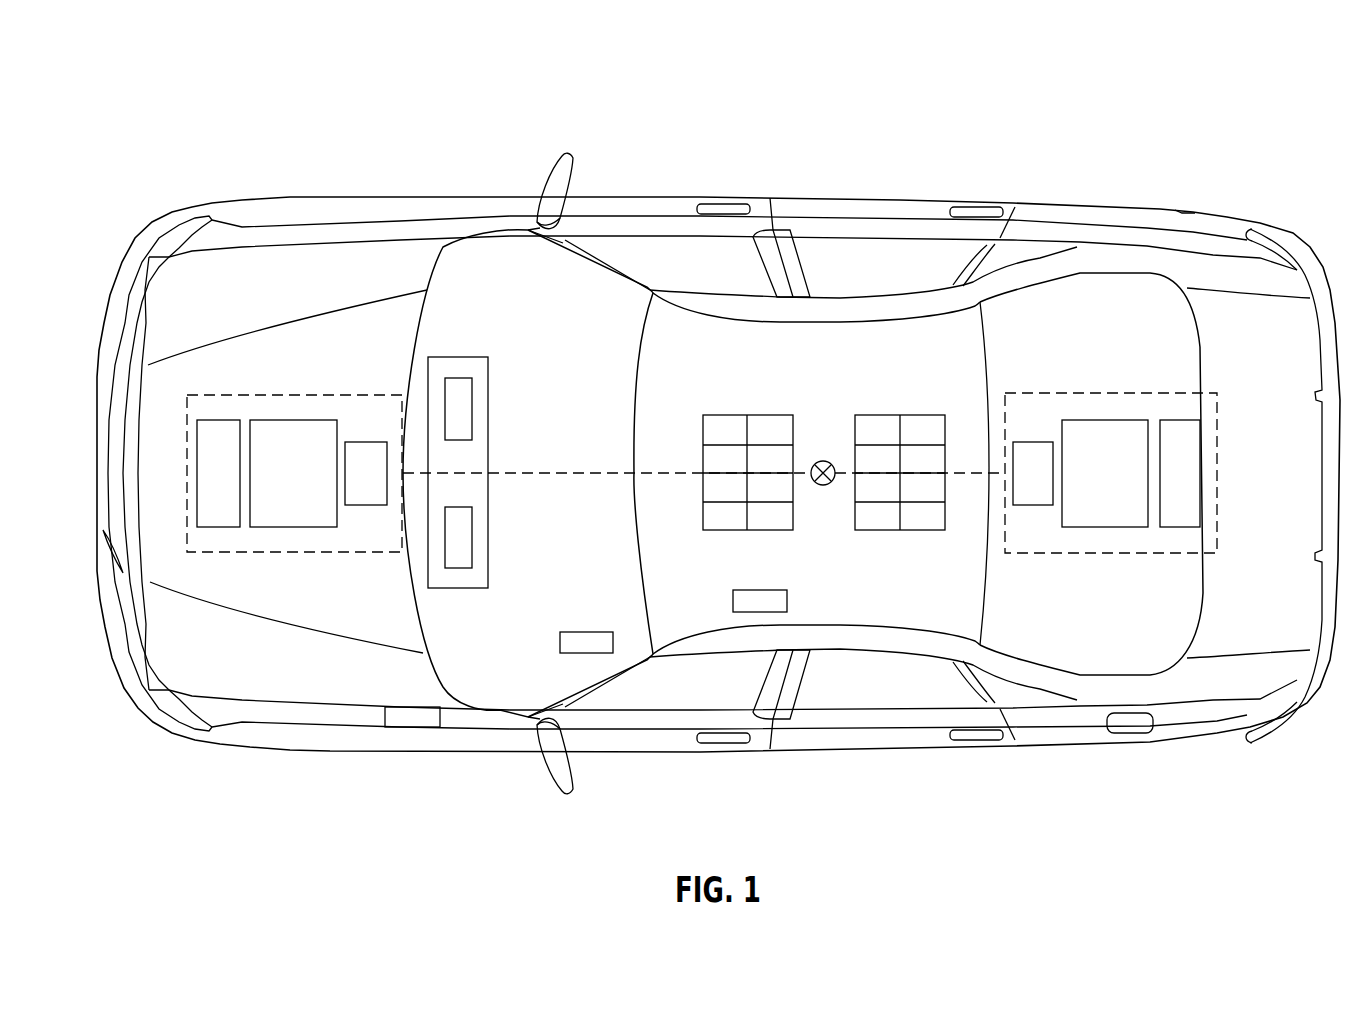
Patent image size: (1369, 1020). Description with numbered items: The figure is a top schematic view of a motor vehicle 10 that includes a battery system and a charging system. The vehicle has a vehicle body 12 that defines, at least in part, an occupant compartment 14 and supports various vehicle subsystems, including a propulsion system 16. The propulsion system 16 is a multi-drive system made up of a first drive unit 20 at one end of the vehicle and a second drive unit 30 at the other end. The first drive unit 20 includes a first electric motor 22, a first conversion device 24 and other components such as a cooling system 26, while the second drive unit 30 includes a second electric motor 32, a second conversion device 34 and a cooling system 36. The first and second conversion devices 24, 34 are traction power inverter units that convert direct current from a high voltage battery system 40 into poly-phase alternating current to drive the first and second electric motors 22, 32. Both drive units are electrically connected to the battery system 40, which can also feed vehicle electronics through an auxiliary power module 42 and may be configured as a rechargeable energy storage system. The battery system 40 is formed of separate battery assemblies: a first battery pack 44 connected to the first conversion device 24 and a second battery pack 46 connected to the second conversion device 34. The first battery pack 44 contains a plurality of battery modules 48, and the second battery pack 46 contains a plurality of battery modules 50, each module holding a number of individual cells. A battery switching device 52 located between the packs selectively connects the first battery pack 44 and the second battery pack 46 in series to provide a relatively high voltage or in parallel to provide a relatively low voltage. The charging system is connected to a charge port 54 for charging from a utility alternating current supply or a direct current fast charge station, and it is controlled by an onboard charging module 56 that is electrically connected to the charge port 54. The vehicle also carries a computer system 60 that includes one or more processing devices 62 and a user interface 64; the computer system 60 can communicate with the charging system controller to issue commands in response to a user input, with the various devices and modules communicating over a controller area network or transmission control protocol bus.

The motor vehicle 10 is at (130, 80).
The vehicle body 12 is at (792, 199).
The occupant compartment 14 is at (850, 640).
The propulsion system 16 is at (292, 597).
The first drive unit 20 is at (250, 395).
The first electric motor 22 is at (307, 420).
The first conversion device 24 is at (373, 505).
The cooling system 26 is at (222, 527).
The second drive unit 30 is at (1160, 393).
The second electric motor 32 is at (1100, 437).
The second conversion device 34 is at (1025, 507).
The cooling system 36 is at (1183, 527).
The battery system 40 is at (842, 493).
The auxiliary power module 42 is at (740, 603).
The first battery pack 44 is at (778, 535).
The second battery pack 46 is at (884, 535).
The battery modules 48 is at (758, 427).
The battery modules 50 is at (872, 427).
The battery switching device 52 is at (824, 460).
The charge port 54 is at (407, 712).
The onboard charging module 56 is at (567, 643).
The computer system 60 is at (456, 342).
The processing devices 62 is at (472, 548).
The user interface 64 is at (472, 405).